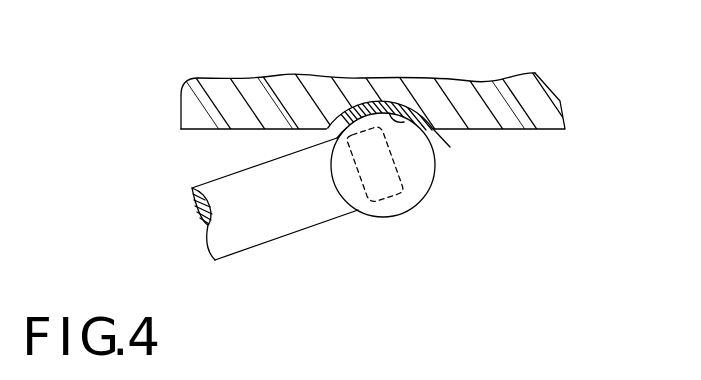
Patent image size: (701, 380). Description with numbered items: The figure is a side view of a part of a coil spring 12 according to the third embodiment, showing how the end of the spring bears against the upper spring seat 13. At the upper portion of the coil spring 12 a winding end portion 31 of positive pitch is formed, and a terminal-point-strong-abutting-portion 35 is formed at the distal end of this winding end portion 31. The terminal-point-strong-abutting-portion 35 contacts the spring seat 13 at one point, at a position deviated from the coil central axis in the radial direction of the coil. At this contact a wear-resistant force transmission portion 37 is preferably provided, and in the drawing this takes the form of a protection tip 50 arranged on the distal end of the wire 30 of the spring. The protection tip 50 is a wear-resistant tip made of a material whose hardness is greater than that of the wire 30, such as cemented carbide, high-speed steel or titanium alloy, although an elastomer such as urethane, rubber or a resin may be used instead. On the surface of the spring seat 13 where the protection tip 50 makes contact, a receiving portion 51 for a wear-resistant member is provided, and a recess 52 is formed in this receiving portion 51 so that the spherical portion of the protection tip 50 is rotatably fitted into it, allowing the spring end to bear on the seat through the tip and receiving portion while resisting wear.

The coil spring 12 is at (282, 245).
The spring seat 13 is at (560, 100).
The wire 30 is at (194, 210).
The winding end portion 31 is at (222, 179).
The terminal-point-strong-abutting-portion 35 is at (378, 77).
The force transmission portion 37 is at (327, 131).
The protection tip 50 is at (434, 172).
The receiving portion 51 is at (450, 147).
The recess 52 is at (410, 112).